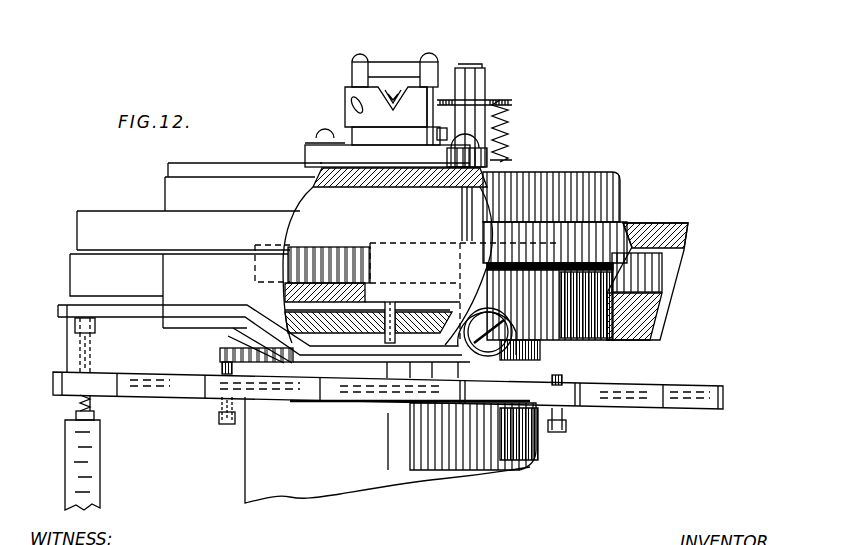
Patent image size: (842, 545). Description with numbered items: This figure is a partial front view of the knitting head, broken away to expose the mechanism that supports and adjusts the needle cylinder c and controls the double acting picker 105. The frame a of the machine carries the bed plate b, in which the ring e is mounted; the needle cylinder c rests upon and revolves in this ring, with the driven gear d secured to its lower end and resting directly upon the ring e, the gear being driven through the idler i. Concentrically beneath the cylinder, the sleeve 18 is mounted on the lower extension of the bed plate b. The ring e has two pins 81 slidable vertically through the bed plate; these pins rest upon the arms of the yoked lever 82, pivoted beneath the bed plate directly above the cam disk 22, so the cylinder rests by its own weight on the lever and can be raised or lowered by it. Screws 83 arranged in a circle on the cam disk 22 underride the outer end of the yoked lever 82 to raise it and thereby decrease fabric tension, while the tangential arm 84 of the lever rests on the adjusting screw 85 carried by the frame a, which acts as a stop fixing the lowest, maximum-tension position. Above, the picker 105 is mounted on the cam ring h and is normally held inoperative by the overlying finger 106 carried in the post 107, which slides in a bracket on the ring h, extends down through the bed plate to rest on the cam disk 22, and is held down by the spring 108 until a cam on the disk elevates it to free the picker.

The double acting picker 105 is at (398, 85).
The overlying finger 106 is at (448, 98).
The post 107 is at (464, 207).
The spring 108 is at (506, 132).
The pins 81 is at (401, 318).
The yoked lever 82 is at (356, 356).
The screws 83 is at (218, 370).
The tangential arm 84 is at (195, 308).
The adjusting screw 85 is at (78, 347).
The cam disk 22 is at (725, 396).
The sleeve 18 is at (247, 462).
The frame a is at (66, 458).
The bed plate b is at (114, 215).
The needle cylinder c is at (277, 294).
The driven gear d is at (330, 253).
The ring e is at (423, 250).
The cam ring h is at (614, 176).
The idler i is at (662, 273).